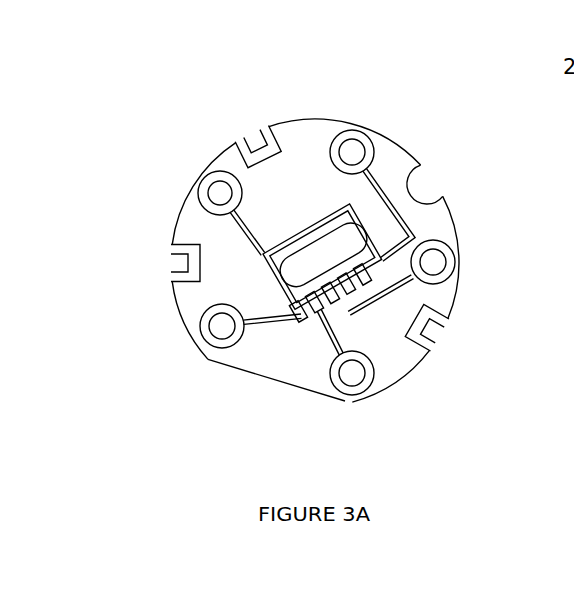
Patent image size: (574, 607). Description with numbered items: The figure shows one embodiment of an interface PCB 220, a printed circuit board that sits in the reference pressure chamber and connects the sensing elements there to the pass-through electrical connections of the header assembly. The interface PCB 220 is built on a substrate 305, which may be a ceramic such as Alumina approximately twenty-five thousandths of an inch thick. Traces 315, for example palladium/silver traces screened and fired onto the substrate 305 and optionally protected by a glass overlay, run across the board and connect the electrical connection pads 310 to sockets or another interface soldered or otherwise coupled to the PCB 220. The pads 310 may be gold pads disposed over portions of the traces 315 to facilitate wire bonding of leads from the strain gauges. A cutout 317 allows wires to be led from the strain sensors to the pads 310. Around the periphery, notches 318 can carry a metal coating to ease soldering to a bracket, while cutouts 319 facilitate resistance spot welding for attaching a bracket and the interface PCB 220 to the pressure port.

The interface PCB 220 is at (158, 62).
The substrate 305 is at (190, 182).
The electrical connection pads 310 is at (367, 282).
The traces 315 is at (273, 152).
The cutout 317 is at (273, 262).
The notches 318 is at (241, 132).
The cutouts 319 is at (287, 124).